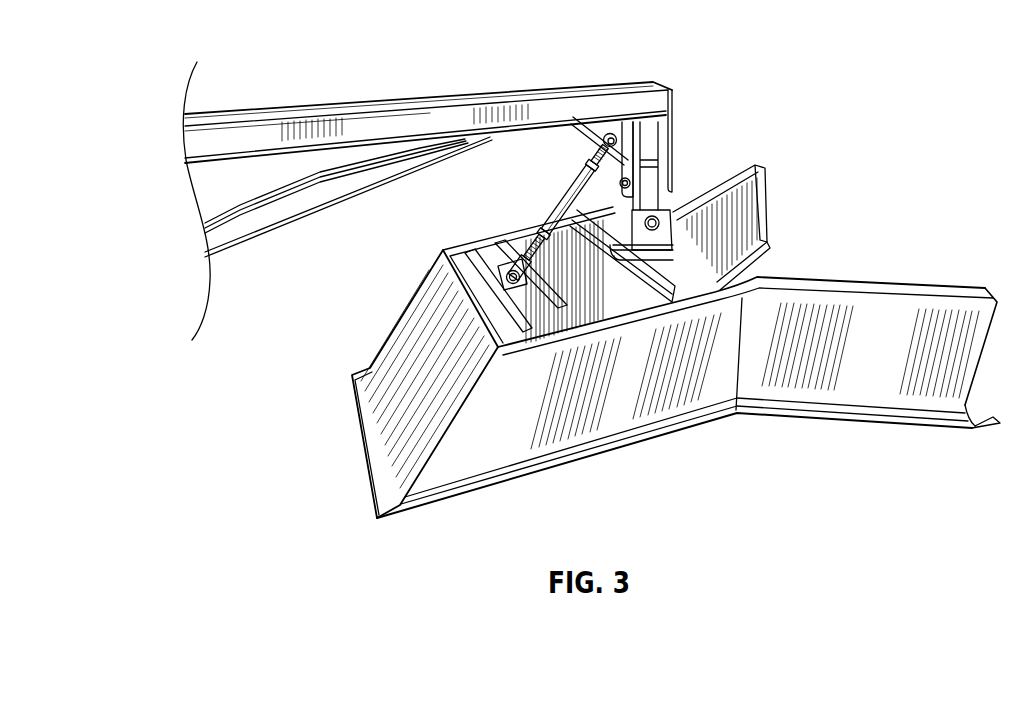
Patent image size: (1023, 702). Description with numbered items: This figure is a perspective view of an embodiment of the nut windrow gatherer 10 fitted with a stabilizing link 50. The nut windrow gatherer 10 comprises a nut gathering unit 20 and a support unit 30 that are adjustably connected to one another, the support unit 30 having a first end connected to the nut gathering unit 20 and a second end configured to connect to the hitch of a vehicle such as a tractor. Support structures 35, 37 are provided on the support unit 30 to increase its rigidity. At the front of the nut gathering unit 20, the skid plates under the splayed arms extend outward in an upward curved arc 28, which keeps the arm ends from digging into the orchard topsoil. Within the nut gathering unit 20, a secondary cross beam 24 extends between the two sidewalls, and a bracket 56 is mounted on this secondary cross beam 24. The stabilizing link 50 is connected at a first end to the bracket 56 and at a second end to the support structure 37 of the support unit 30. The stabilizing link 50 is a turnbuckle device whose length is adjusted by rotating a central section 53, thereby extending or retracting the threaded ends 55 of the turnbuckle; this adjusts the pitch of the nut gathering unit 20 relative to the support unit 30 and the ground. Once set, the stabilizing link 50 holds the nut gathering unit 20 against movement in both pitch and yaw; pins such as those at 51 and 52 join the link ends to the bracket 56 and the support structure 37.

The nut windrow gatherer 10 is at (880, 130).
The nut gathering unit 20 is at (681, 454).
The secondary cross beam 24 is at (513, 315).
The upward curved arc 28 is at (990, 430).
The support unit 30 is at (373, 90).
The support structure 35 is at (338, 206).
The support structure 37 is at (603, 126).
The stabilizing link 50 is at (546, 176).
The lower pin 51 is at (522, 276).
The upper hanger 52 is at (588, 128).
The central section 53 is at (545, 218).
The threaded ends 55 is at (593, 158).
The bracket 56 is at (503, 265).